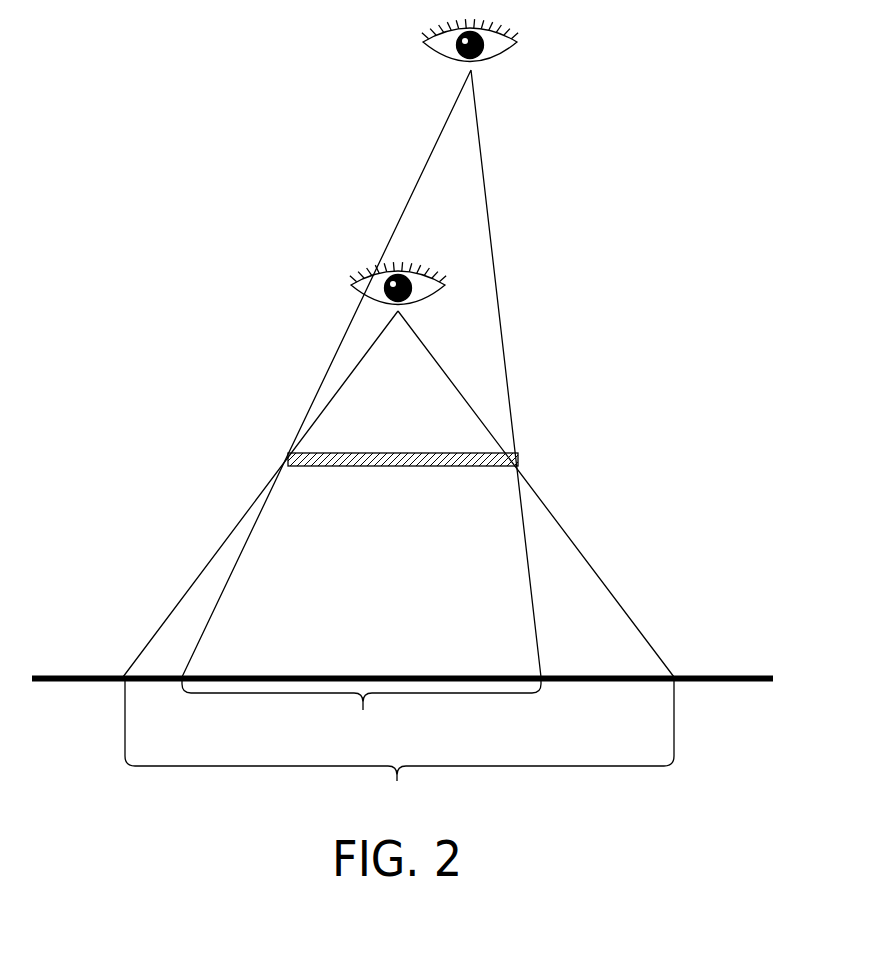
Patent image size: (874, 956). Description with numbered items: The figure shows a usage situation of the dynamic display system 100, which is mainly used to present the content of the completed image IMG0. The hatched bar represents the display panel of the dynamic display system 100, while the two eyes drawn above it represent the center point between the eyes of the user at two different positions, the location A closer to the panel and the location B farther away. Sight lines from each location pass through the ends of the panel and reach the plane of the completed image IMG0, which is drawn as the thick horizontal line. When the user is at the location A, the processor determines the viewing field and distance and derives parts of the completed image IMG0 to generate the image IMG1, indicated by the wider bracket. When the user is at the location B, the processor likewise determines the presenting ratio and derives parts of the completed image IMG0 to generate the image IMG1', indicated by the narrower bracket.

The dynamic display system 100 is at (388, 452).
The location A is at (407, 285).
The location B is at (484, 41).
The completed image IMG0 is at (445, 680).
The image IMG1 is at (399, 750).
The image IMG1' is at (361, 714).